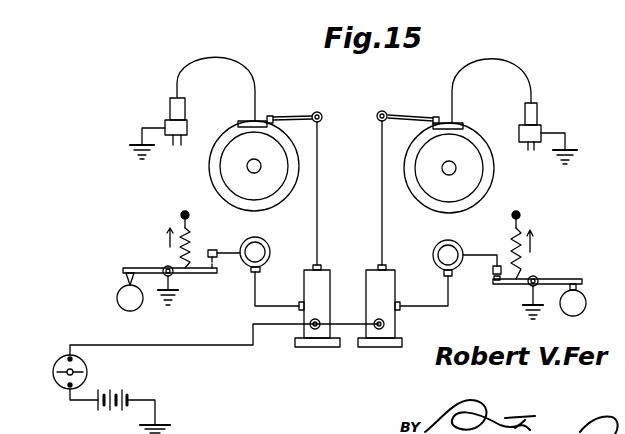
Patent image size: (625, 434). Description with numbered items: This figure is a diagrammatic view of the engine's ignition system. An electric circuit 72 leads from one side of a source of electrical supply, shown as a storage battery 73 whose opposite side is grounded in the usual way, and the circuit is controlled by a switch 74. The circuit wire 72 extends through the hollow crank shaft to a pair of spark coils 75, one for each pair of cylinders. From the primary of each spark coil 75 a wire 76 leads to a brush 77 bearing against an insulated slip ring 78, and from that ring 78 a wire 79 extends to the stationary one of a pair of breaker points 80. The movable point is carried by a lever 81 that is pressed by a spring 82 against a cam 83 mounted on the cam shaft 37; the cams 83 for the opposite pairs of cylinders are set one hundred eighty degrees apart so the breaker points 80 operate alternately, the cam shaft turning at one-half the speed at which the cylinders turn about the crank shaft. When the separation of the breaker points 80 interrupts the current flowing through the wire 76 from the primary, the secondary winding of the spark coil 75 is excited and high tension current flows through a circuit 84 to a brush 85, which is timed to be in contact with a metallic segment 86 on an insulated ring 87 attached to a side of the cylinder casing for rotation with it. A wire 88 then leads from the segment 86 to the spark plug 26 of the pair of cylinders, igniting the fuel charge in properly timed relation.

The spark plug 26 is at (170, 110).
The cam shaft 37 is at (119, 303).
The electric circuit 72 is at (215, 348).
The storage battery 73 is at (104, 410).
The switch 74 is at (60, 377).
The spark coil 75 is at (320, 336).
The wire 76 is at (255, 306).
The brush 77 is at (261, 270).
The insulated slip ring 78 is at (271, 248).
The wire 79 is at (497, 258).
The breaker points 80 is at (504, 292).
The lever 81 is at (153, 268).
The spring 82 is at (180, 228).
The cam 83 is at (125, 286).
The circuit 84 is at (317, 186).
The brush 85 is at (268, 116).
The metallic segment 86 is at (244, 120).
The insulated ring 87 is at (211, 167).
The wire 88 is at (242, 63).